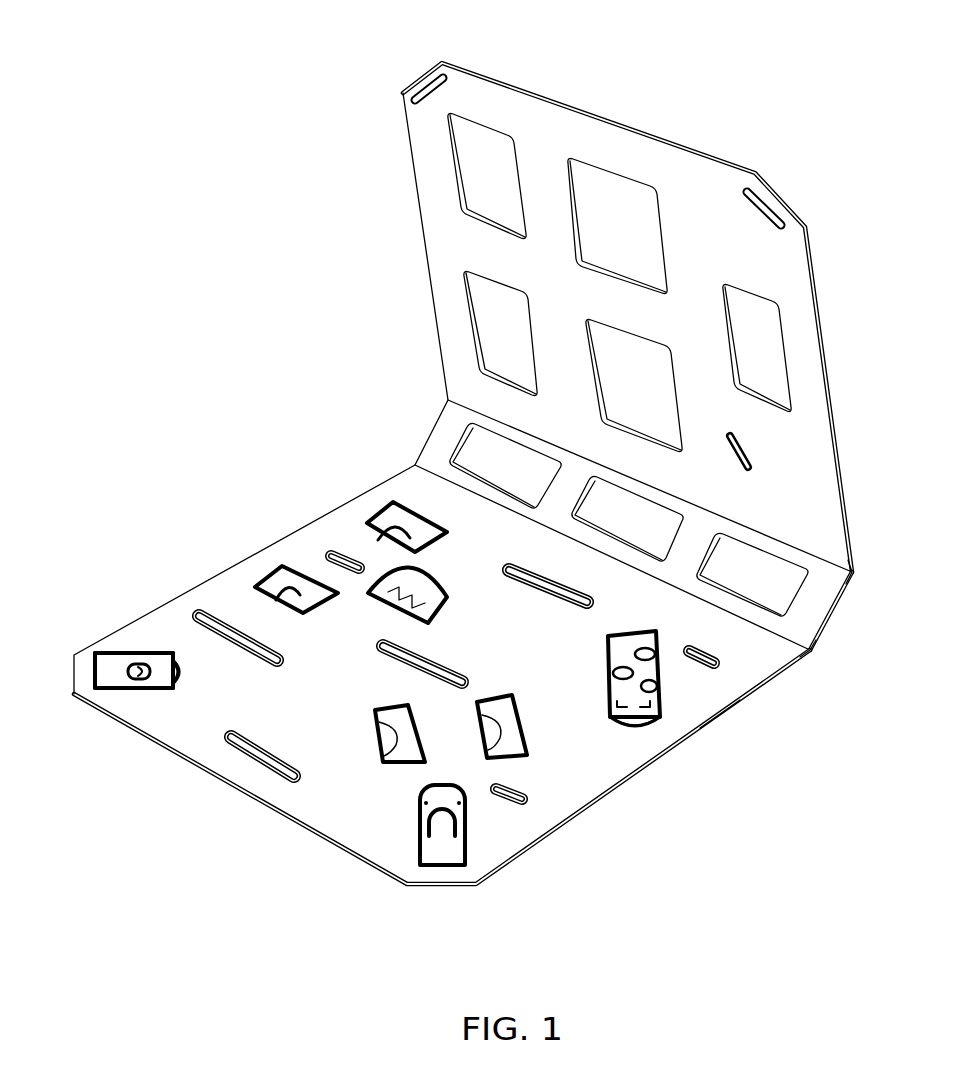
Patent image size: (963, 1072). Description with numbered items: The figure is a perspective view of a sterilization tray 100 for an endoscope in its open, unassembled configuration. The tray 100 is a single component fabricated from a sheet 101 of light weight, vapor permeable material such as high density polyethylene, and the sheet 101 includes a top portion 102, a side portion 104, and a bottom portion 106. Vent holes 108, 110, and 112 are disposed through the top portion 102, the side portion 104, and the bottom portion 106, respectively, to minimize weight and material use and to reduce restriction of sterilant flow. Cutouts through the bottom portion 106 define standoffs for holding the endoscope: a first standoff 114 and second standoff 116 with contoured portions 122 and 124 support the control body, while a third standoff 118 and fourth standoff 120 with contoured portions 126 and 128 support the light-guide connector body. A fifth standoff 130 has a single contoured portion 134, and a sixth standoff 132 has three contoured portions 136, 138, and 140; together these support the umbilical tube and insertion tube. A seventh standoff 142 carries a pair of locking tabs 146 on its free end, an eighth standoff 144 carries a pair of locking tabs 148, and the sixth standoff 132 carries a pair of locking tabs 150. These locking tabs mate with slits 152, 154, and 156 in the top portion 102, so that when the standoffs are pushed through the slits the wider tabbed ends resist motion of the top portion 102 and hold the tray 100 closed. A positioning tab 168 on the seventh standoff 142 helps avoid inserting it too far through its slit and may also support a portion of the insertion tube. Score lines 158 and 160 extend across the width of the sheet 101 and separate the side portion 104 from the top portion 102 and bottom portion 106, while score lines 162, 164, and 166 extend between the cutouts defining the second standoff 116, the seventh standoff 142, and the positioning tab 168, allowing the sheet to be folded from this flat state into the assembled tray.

The tray 100 is at (478, 481).
The sheet 101 is at (624, 317).
The top portion 102 is at (818, 312).
The side portion 104 is at (833, 611).
The bottom portion 106 is at (672, 752).
The holes 108 is at (484, 181).
The holes 110 is at (480, 449).
The holes 112 is at (222, 614).
The first standoff 114 is at (295, 580).
The second standoff 116 is at (392, 508).
The third standoff 118 is at (405, 752).
The fourth standoff 120 is at (513, 757).
The contoured portion 122 is at (278, 536).
The contoured portion 124 is at (377, 484).
The contoured portion 126 is at (375, 737).
The contoured portion 128 is at (487, 742).
The fifth standoff 130 is at (402, 587).
The sixth standoff 132 is at (656, 726).
The contoured portion 134 is at (374, 614).
The contoured portion 136 is at (662, 658).
The contoured portion 138 is at (608, 673).
The contoured portion 140 is at (658, 687).
The seventh standoff 142 is at (99, 666).
The eighth standoff 144 is at (415, 867).
The locking tabs 146 is at (173, 655).
The locking tabs 148 is at (445, 808).
The locking tabs 150 is at (625, 725).
The slit 152 is at (752, 463).
The slit 154 is at (773, 195).
The slit 156 is at (428, 78).
The score line 158 is at (853, 568).
The score line 160 is at (813, 653).
The score line 162 is at (422, 518).
The score line 164 is at (95, 662).
The score line 166 is at (85, 724).
The positioning tab 168 is at (128, 672).